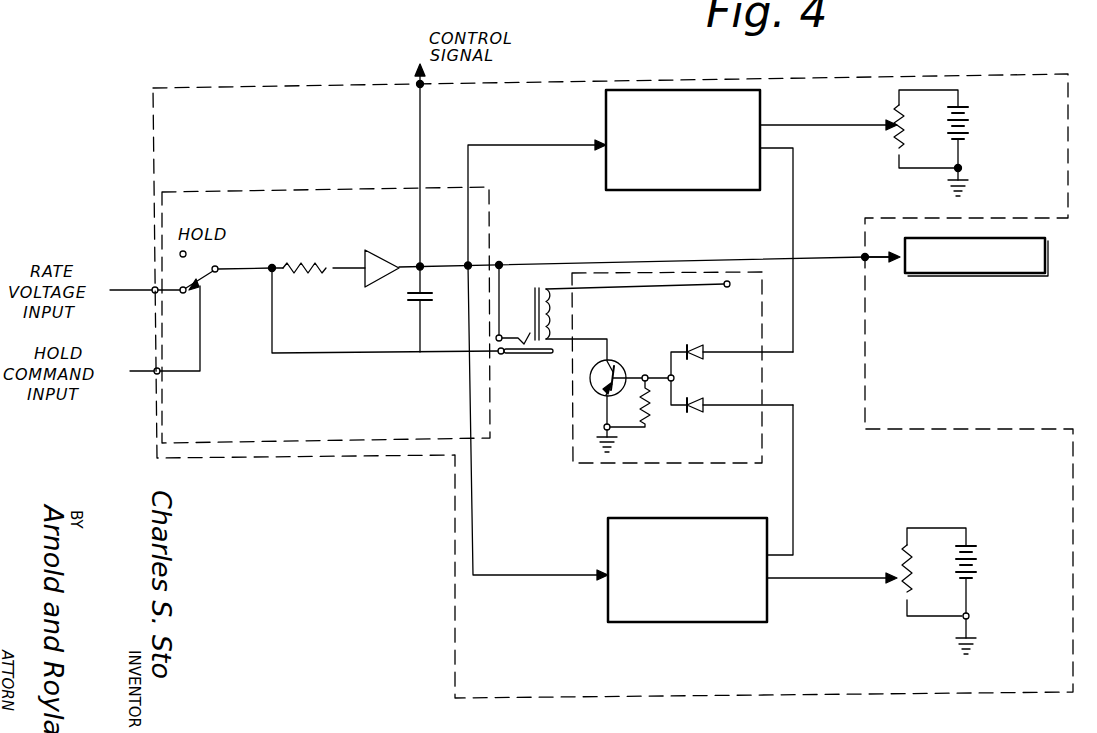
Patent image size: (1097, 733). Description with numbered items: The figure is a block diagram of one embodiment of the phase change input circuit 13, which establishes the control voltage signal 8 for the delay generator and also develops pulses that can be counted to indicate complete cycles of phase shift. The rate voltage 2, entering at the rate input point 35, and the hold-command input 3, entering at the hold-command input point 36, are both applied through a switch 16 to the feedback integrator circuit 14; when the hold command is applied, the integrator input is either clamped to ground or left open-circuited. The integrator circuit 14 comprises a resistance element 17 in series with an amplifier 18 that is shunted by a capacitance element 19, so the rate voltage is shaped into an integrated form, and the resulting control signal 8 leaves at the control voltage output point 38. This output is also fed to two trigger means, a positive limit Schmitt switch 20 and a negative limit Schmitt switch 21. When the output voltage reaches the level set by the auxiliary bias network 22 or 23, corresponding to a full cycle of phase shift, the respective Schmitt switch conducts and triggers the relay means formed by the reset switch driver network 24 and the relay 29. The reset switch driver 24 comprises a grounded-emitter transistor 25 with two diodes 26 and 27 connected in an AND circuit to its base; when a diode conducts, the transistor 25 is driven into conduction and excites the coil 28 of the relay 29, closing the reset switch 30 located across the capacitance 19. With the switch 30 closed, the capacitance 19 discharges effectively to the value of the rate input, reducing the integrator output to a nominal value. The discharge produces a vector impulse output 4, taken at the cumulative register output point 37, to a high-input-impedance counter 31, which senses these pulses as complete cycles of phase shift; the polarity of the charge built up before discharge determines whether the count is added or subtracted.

The rate voltage 2 is at (155, 287).
The hold-command signal 3 is at (150, 376).
The vector impulse output 4 is at (879, 261).
The control voltage signal 8 is at (422, 116).
The phase change input circuit 13 is at (550, 649).
The feedback integrator circuit 14 is at (352, 397).
The switch 16 is at (212, 277).
The resistance element 17 is at (302, 262).
The amplifier 18 is at (376, 250).
The capacitance element 19 is at (400, 304).
The positive limit Schmitt switch 20 is at (686, 192).
The negative limit Schmitt switch 21 is at (687, 624).
The auxiliary bias network 22 is at (970, 157).
The auxiliary bias network 23 is at (979, 600).
The reset switch driver network 24 is at (665, 466).
The grounded-emitter transistor 25 is at (622, 371).
The diode 26 is at (700, 357).
The diode 27 is at (700, 409).
The coil 28 is at (546, 288).
The relay 29 is at (521, 256).
The reset switch 30 is at (530, 355).
The counter 31 is at (977, 275).
The rate input point 35 is at (160, 294).
The hold-command input point 36 is at (161, 372).
The cumulative register output point 37 is at (863, 255).
The control voltage output point 38 is at (418, 86).